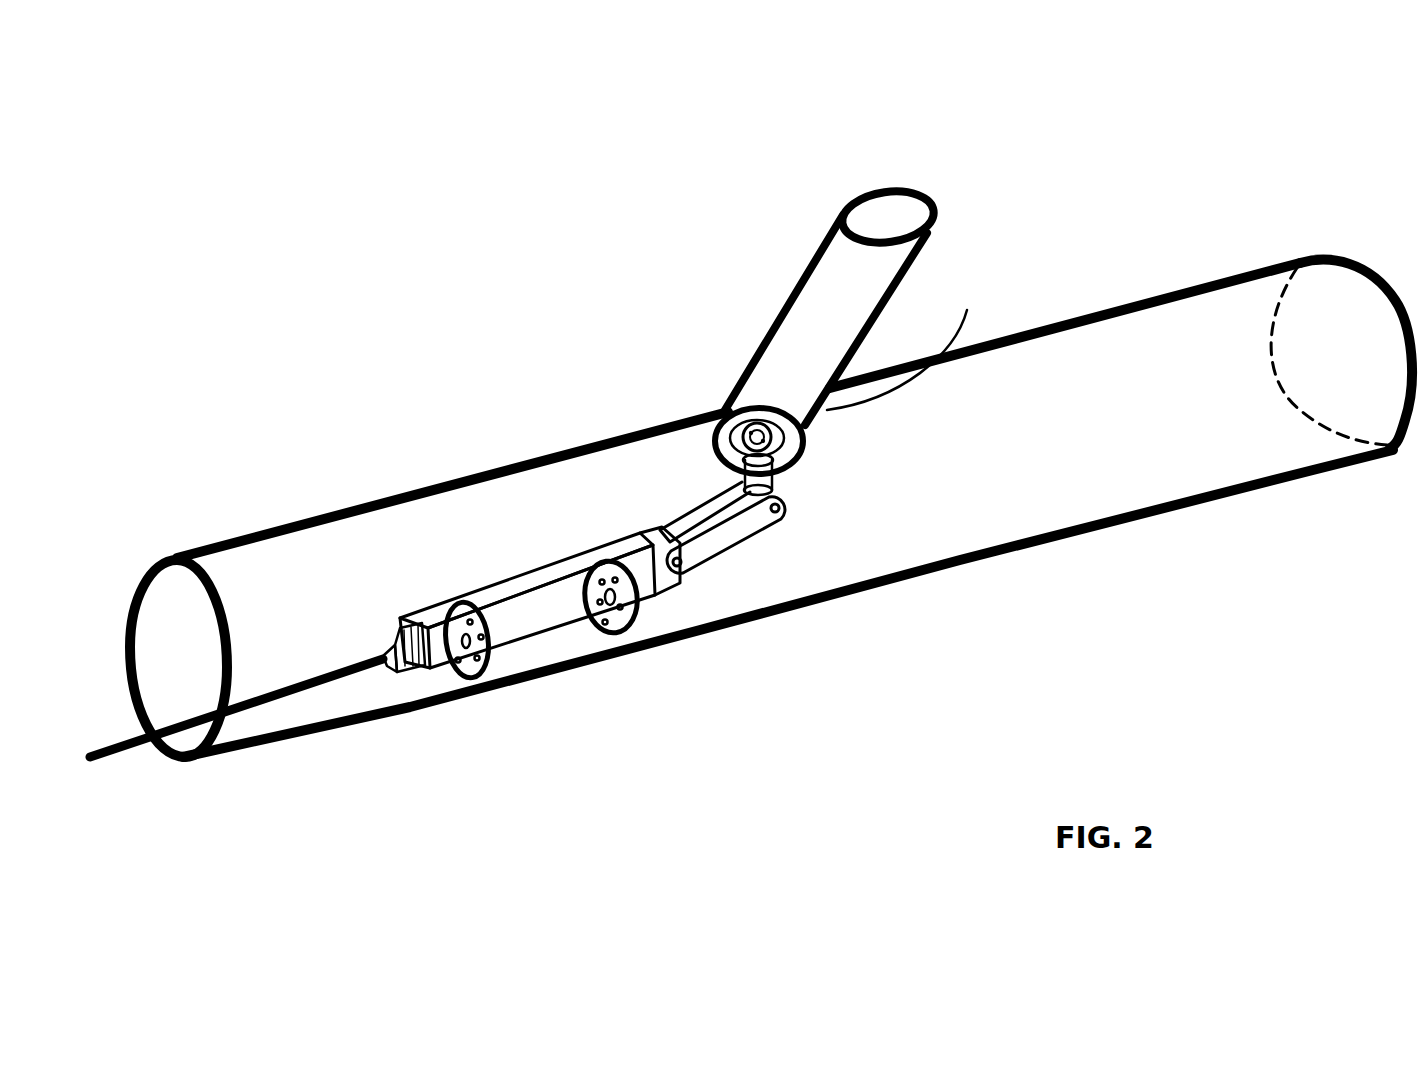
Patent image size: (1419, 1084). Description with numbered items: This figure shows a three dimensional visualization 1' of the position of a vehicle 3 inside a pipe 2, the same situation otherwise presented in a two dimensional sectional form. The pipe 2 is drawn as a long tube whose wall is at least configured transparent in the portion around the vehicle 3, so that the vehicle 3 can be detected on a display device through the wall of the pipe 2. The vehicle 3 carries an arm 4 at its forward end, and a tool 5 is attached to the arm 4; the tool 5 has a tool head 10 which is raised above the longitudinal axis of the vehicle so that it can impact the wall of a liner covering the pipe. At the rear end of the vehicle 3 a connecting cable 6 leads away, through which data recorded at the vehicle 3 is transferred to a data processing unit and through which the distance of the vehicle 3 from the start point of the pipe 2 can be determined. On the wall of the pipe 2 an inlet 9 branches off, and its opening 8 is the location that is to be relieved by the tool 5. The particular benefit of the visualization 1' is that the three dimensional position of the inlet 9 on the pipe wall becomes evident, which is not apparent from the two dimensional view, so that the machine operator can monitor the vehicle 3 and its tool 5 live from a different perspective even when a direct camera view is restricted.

The three dimensional visualization 1' is at (539, 477).
The pipe 2 is at (358, 560).
The vehicle 3 is at (545, 648).
The arm 4 is at (745, 563).
The tool 5 is at (791, 481).
The connecting cable 6 is at (303, 698).
The opening 8 is at (730, 415).
The inlet 9 is at (815, 333).
The tool head 10 is at (907, 339).